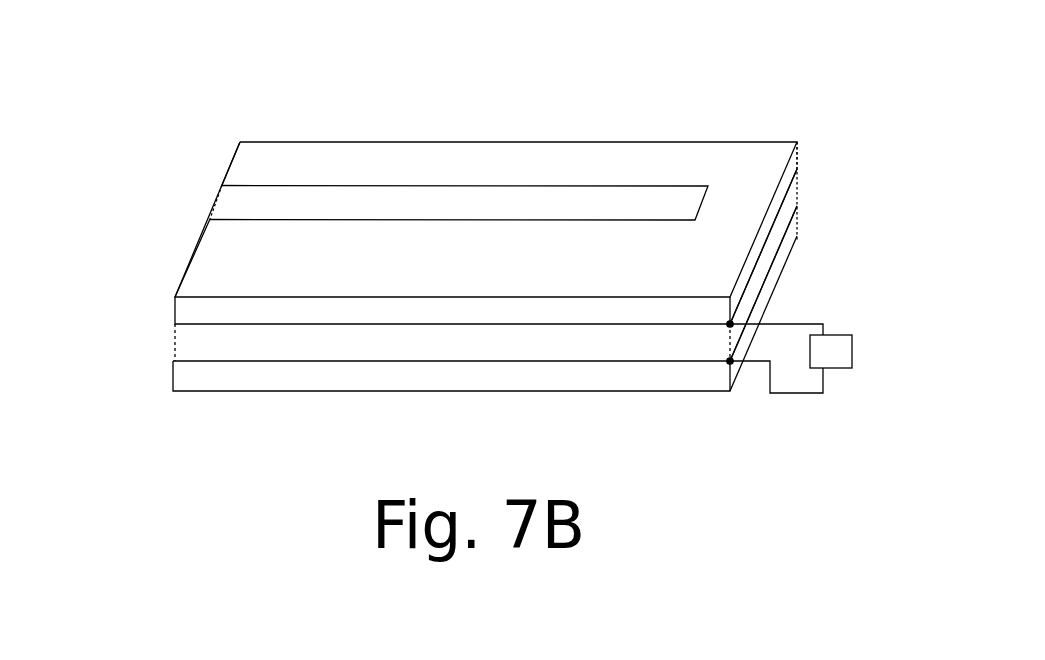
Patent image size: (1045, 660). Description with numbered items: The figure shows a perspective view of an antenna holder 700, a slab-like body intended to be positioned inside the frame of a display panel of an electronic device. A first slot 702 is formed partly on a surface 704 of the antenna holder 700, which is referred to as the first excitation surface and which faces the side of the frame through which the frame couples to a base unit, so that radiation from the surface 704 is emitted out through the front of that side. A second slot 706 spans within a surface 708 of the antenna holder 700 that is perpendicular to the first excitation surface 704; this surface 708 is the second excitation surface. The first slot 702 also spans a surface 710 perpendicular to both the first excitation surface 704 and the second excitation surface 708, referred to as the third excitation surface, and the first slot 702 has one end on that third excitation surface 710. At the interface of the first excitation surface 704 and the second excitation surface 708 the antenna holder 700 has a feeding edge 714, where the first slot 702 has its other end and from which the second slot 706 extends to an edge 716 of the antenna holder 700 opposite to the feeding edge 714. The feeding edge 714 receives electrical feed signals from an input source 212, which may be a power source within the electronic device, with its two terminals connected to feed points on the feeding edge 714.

The antenna holder 700 is at (425, 96).
The first slot 702 is at (422, 339).
The first excitation surface 704 is at (255, 368).
The second slot 706 is at (745, 297).
The second excitation surface 708 is at (747, 262).
The third excitation surface 710 is at (738, 168).
The feeding edge 714 is at (737, 377).
The edge 716 is at (798, 163).
The input source 212 is at (823, 353).